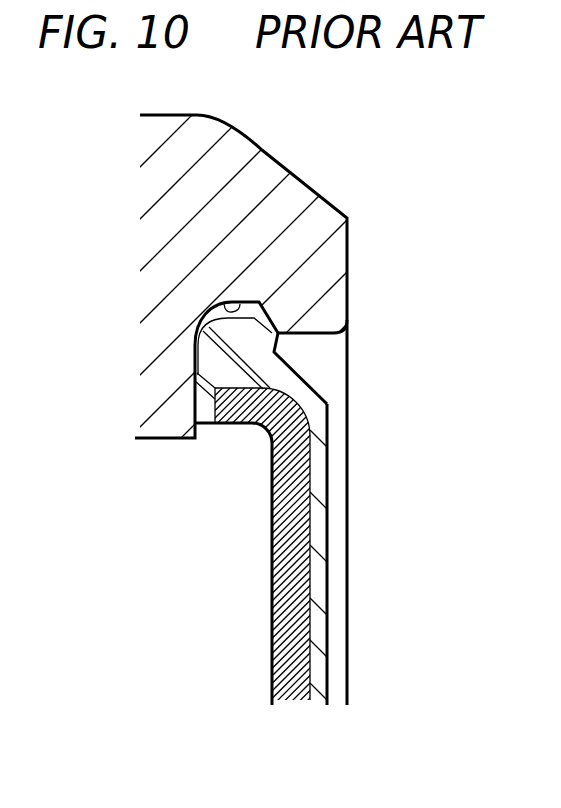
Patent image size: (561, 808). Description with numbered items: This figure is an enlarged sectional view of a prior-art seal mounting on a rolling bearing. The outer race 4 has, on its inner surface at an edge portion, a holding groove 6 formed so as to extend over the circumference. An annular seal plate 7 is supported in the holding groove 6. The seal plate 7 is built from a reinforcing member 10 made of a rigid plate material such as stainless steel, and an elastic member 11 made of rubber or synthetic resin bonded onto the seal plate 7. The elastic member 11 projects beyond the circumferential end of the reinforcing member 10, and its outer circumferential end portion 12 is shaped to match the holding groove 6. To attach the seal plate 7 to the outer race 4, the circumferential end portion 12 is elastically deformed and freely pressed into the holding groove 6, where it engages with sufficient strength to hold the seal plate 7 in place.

The outer race 4 is at (188, 136).
The holding groove 6 is at (243, 302).
The seal plate 7 is at (323, 475).
The reinforcing member 10 is at (302, 545).
The elastic member 11 is at (305, 393).
The circumferential end portion 12 is at (248, 332).